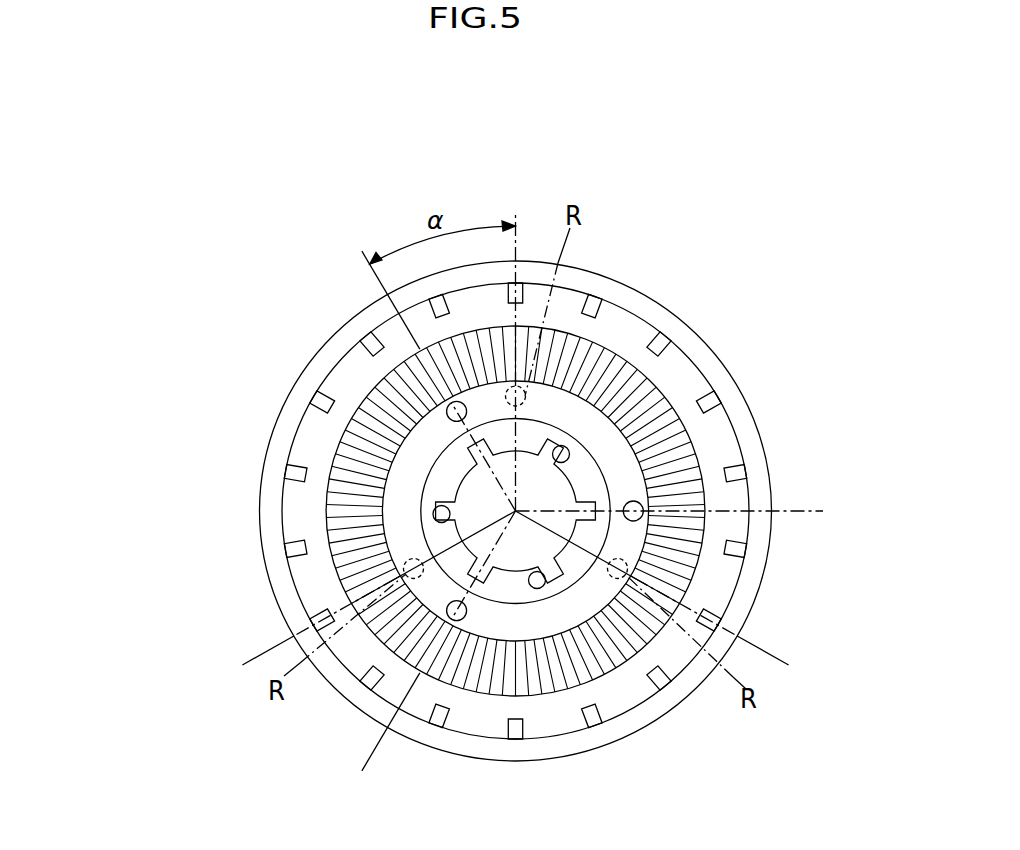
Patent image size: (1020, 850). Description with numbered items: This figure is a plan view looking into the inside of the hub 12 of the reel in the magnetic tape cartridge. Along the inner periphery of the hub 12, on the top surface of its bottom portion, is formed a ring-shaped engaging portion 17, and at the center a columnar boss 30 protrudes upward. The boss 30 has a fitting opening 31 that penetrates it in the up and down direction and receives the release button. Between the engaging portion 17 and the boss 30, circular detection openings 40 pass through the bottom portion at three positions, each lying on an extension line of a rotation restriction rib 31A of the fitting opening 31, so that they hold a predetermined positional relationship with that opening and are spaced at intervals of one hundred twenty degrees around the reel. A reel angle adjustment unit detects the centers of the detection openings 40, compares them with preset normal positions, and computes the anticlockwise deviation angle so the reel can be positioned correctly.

The hub 12 is at (625, 727).
The engaging portion 17 is at (590, 472).
The boss 30 is at (676, 410).
The fitting opening 31 is at (462, 470).
The rotation restriction rib 31A is at (569, 452).
The detection opening 40 is at (446, 414).